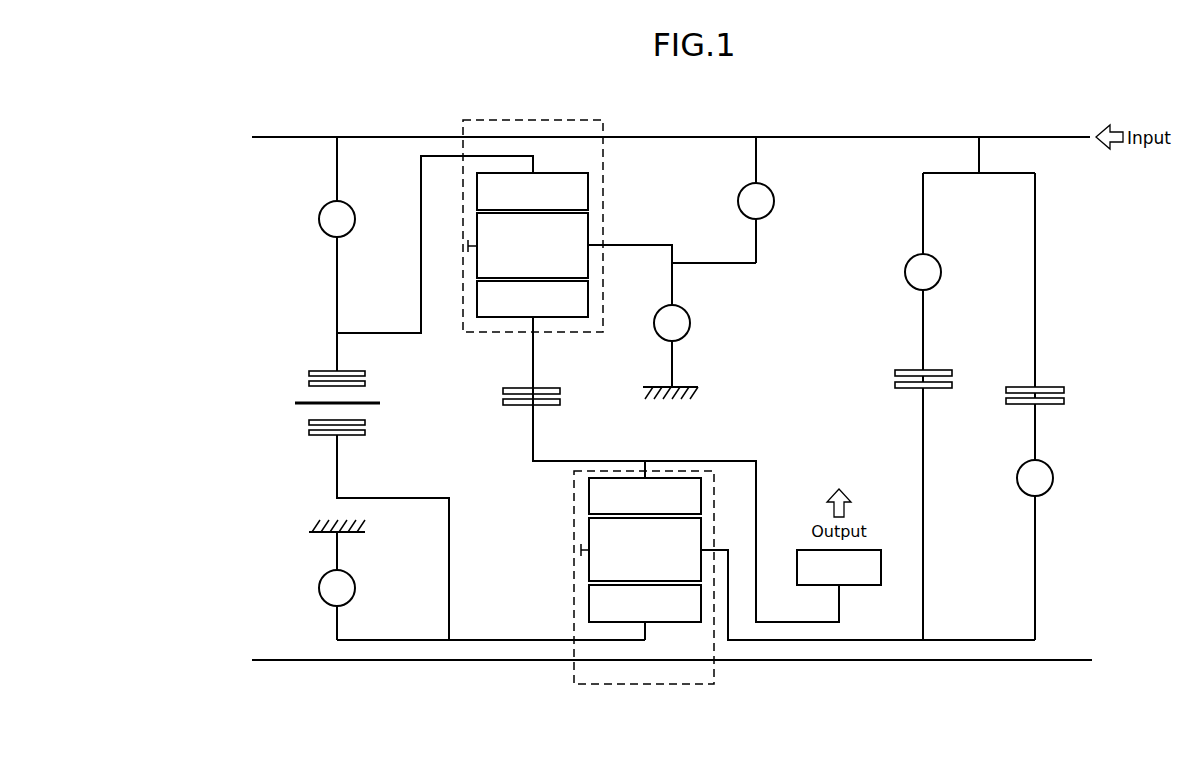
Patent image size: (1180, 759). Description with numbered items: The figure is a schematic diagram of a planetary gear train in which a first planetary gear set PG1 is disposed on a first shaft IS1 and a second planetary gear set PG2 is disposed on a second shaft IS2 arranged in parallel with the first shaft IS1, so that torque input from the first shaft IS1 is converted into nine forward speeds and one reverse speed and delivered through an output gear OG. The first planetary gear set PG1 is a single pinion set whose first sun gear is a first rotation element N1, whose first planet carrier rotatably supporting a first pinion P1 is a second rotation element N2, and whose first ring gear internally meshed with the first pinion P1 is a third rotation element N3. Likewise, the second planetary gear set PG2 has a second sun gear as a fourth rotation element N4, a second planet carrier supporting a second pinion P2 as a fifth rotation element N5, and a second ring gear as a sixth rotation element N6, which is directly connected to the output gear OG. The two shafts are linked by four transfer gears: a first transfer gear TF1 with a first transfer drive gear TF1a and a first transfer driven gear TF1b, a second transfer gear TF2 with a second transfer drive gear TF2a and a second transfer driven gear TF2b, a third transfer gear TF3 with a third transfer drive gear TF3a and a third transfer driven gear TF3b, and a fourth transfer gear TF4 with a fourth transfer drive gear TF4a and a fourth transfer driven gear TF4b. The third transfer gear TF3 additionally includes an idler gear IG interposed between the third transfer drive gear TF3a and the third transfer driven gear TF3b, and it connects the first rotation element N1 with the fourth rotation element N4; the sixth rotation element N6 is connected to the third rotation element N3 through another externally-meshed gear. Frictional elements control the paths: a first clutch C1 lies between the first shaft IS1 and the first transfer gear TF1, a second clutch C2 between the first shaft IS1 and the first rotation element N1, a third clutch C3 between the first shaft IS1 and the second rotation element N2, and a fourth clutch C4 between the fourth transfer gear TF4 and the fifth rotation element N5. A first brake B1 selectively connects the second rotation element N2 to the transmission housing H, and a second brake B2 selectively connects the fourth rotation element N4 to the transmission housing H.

The first shaft IS1 is at (867, 137).
The second shaft IS2 is at (887, 660).
The first planetary gear set PG1 is at (527, 118).
The second planetary gear set PG2 is at (724, 679).
The first rotation element N1 is at (532, 191).
The second rotation element N2 is at (636, 245).
The third rotation element N3 is at (532, 299).
The fourth rotation element N4 is at (645, 603).
The fifth rotation element N5 is at (719, 548).
The sixth rotation element N6 is at (645, 496).
The first pinion P1 is at (532, 245).
The second pinion P2 is at (645, 549).
The first clutch C1 is at (923, 406).
The second clutch C2 is at (337, 235).
The third clutch C3 is at (756, 200).
The fourth clutch C4 is at (1035, 406).
The first brake B1 is at (672, 325).
The second brake B2 is at (337, 586).
The first transfer gear TF1 is at (824, 345).
The first transfer drive gear TF1a is at (895, 373).
The first transfer driven gear TF1b is at (895, 385).
The second transfer gear TF2 is at (436, 365).
The second transfer drive gear TF2a is at (503, 391).
The second transfer driven gear TF2b is at (503, 402).
The third transfer gear TF3 is at (226, 353).
The third transfer drive gear TF3a is at (309, 373).
The third transfer driven gear TF3b is at (309, 432).
The fourth transfer gear TF4 is at (1137, 370).
The fourth transfer drive gear TF4a is at (1064, 390).
The fourth transfer driven gear TF4b is at (1064, 401).
The idler gear IG is at (335, 398).
The output gear OG is at (839, 567).
The transmission housing H is at (317, 528).